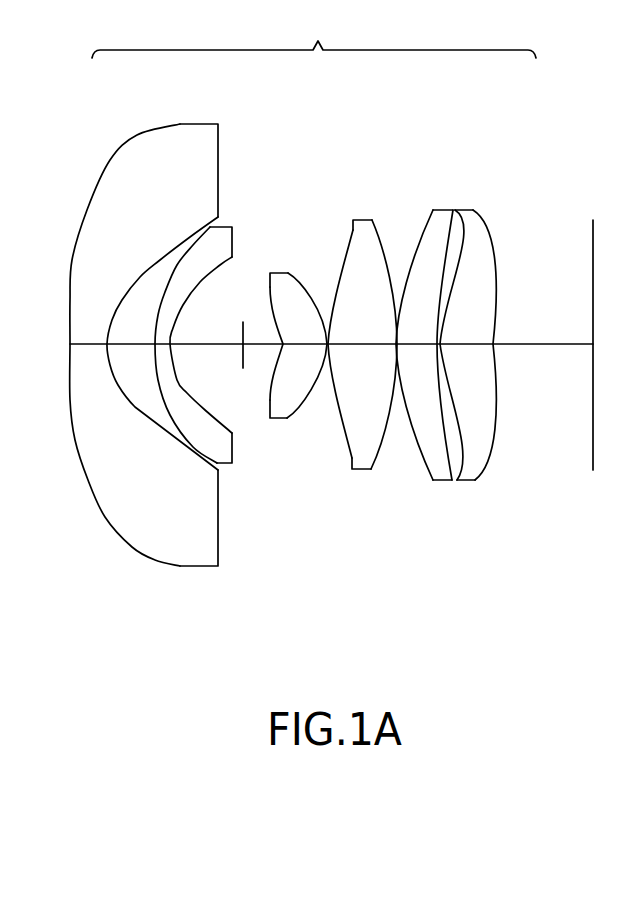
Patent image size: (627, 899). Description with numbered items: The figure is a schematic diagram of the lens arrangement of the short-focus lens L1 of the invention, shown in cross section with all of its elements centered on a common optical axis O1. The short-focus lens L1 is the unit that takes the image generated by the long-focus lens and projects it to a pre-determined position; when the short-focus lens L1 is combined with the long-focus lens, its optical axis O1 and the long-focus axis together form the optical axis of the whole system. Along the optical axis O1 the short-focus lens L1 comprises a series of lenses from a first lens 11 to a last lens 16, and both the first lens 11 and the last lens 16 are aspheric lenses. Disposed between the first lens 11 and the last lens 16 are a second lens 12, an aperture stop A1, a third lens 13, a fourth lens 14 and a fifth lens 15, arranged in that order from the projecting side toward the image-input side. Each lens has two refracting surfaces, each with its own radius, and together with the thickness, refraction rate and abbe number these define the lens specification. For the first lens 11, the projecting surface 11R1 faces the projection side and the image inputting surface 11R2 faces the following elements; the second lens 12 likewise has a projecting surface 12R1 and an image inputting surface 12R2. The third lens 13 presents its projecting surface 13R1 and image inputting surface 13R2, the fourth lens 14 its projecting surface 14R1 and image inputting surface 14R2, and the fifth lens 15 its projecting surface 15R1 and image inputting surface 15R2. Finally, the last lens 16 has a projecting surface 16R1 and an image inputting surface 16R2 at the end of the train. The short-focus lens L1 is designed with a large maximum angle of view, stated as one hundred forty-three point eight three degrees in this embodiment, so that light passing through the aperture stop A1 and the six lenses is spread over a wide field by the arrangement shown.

The short-focus lens L1 is at (314, 32).
The optical axis O1 is at (243, 343).
The aperture stop A1 is at (212, 343).
The first lens 11 is at (135, 331).
The second lens 12 is at (220, 333).
The third lens 13 is at (317, 332).
The fourth lens 14 is at (380, 332).
The fifth lens 15 is at (452, 332).
The last lens 16 is at (514, 330).
The projecting surface of the first lens 11R1 is at (85, 475).
The image inputting surface of the first lens 11R2 is at (155, 408).
The projecting surface of the second lens 12R1 is at (193, 447).
The image inputting surface of the second lens 12R2 is at (187, 393).
The projecting surface of the third lens 13R1 is at (272, 382).
The image inputting surface of the third lens 13R2 is at (322, 418).
The projecting surface of the fourth lens 14R1 is at (350, 462).
The image inputting surface of the fourth lens 14R2 is at (401, 392).
The projecting surface of the fifth lens 15R1 is at (423, 457).
The image inputting surface of the fifth lens 15R2 is at (473, 387).
The projecting surface of the last lens 16R1 is at (467, 443).
The image inputting surface of the last lens 16R2 is at (530, 387).